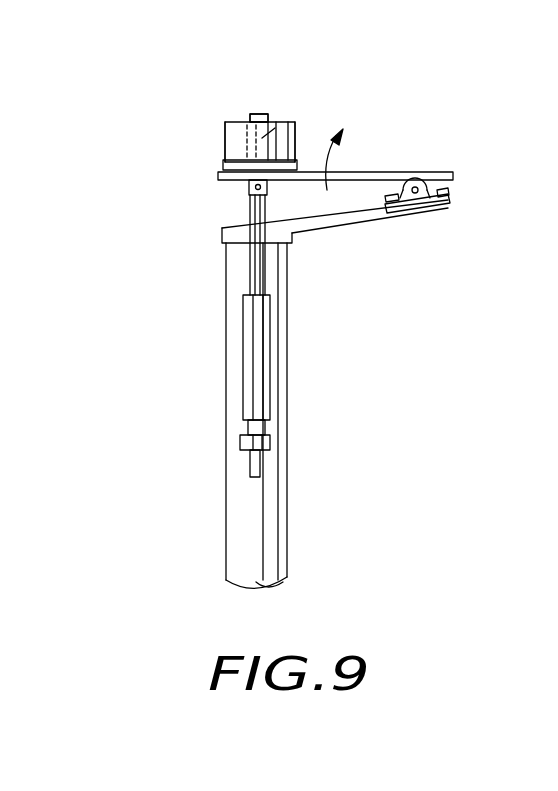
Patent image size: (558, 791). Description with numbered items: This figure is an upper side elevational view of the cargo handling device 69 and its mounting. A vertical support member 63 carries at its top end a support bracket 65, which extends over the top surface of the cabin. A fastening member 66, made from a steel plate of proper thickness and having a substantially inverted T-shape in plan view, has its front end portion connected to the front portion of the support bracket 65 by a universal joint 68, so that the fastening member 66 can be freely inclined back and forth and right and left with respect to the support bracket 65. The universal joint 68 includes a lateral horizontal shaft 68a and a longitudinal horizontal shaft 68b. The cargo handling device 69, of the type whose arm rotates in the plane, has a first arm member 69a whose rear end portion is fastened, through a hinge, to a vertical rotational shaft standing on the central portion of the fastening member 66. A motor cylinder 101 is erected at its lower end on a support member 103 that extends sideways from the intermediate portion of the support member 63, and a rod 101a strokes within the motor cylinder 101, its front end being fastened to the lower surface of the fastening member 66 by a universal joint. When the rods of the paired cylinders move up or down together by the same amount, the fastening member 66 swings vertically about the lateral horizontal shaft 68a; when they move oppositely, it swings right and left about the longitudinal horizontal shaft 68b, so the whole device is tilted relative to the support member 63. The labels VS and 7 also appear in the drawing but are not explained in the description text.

The cargo handling device 69 is at (237, 104).
The first arm member 69a is at (223, 135).
The vibration sensor VS is at (261, 114).
The connector 7 is at (300, 122).
The fastening member 66 is at (378, 172).
The lateral horizontal shaft 68a is at (420, 183).
The universal joint 68 is at (462, 190).
The longitudinal horizontal shaft 68b is at (394, 212).
The support bracket 65 is at (352, 220).
The rod 101a is at (250, 268).
The motor cylinder 101 is at (243, 373).
The support member 103 is at (243, 441).
The support member 63 is at (288, 493).